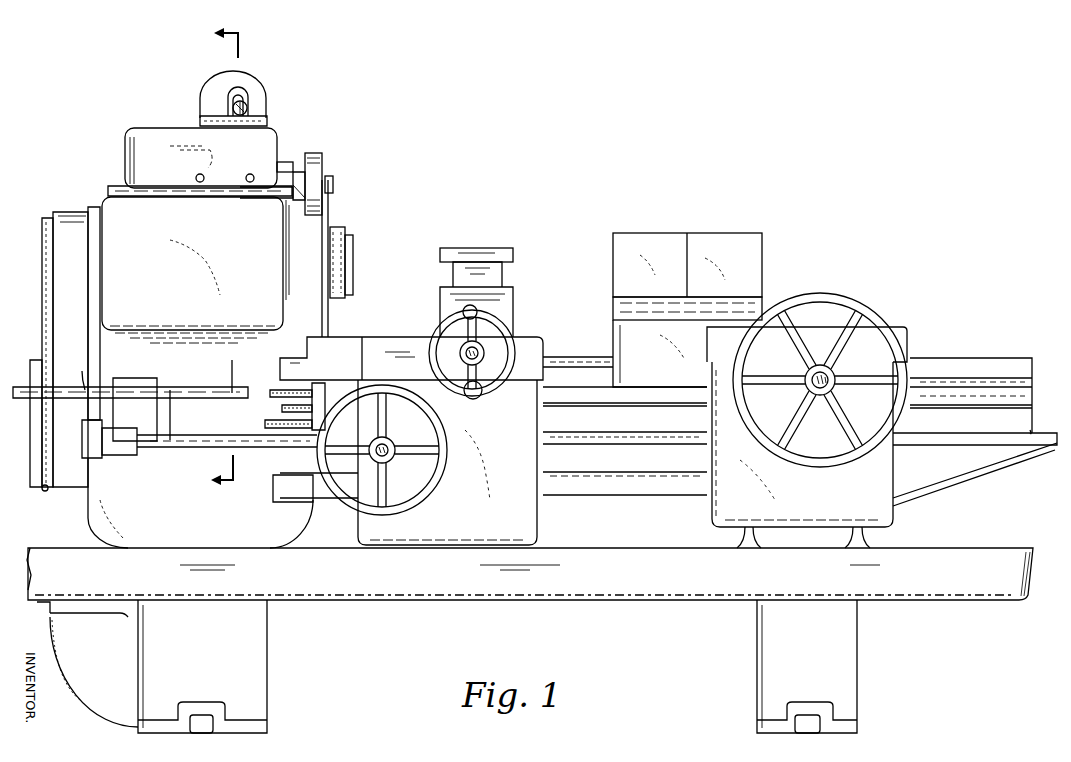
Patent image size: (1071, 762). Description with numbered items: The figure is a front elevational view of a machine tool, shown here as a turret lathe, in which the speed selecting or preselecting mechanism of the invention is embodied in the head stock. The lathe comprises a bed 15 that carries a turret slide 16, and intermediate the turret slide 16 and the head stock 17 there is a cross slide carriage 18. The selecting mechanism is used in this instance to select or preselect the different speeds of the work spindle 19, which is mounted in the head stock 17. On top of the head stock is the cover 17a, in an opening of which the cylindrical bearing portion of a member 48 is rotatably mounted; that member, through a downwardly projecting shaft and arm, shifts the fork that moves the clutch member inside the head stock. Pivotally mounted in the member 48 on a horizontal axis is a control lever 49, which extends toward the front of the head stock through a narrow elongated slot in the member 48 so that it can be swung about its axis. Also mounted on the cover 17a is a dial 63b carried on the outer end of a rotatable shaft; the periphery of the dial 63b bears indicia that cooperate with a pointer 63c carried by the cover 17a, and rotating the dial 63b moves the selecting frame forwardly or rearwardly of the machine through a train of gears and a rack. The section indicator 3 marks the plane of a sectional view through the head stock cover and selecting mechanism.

The section line 3- 3 is at (224, 256).
The bed 15 is at (602, 484).
The turret slide 16 is at (630, 335).
The head stock 17 is at (312, 237).
The cover 17a is at (162, 133).
The cross slide carriage 18 is at (395, 347).
The work spindle 19 is at (355, 252).
The member 48 is at (260, 95).
The control lever 49 is at (250, 110).
The dial 63b is at (318, 175).
The pointer 63c is at (300, 172).